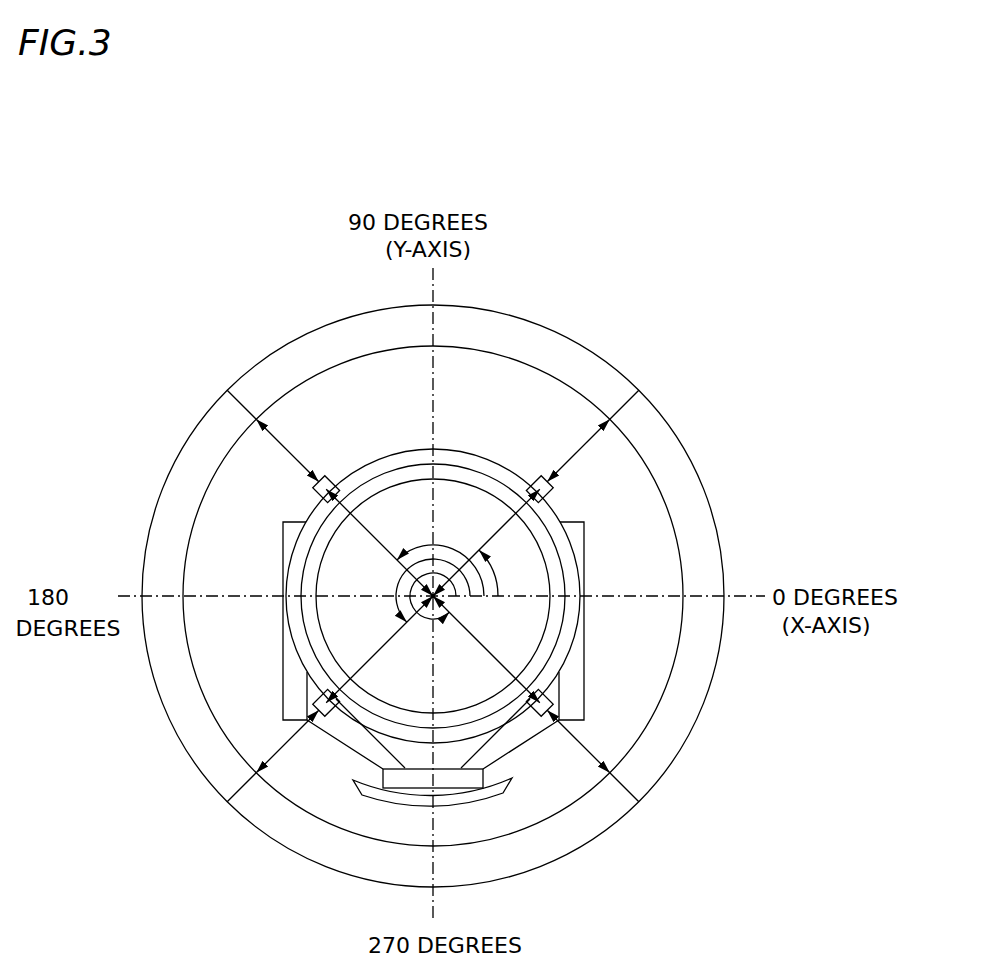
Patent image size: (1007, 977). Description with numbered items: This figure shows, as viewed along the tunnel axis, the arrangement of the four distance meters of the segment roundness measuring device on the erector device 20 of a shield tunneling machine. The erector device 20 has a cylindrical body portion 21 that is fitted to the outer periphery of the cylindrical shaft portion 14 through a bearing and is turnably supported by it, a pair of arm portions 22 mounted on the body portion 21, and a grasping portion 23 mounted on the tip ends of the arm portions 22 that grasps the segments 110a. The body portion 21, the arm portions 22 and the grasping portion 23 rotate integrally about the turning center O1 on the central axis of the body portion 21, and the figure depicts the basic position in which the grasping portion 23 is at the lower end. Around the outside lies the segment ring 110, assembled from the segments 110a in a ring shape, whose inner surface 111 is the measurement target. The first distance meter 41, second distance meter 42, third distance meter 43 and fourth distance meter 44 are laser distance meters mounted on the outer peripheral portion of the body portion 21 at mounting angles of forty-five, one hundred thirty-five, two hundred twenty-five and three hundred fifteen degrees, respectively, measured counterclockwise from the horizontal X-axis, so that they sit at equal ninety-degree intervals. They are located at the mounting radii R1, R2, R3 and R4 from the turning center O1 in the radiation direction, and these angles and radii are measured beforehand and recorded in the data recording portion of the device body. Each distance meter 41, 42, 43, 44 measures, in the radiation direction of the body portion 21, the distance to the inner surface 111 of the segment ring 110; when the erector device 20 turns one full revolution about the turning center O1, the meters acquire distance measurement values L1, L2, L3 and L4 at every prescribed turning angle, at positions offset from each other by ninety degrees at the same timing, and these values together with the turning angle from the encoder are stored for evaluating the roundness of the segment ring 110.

The segment ring 110 is at (653, 400).
The segments 110a is at (547, 866).
The inner surface 111 is at (670, 548).
The erector device 20 is at (467, 433).
The cylindrical body portion 21 is at (362, 470).
The cylindrical shaft portion 14 is at (412, 465).
The arm portions 22 is at (580, 652).
The grasping portion 23 is at (512, 782).
The first distance meter 41 is at (553, 494).
The second distance meter 42 is at (317, 490).
The third distance meter 43 is at (313, 702).
The fourth distance meter 44 is at (556, 700).
The distance measurement value L1 is at (593, 436).
The distance measurement value L2 is at (275, 445).
The distance measurement value L3 is at (277, 752).
The distance measurement value L4 is at (588, 747).
The mounting radius R1 is at (500, 527).
The mounting radius R2 is at (365, 528).
The mounting radius R3 is at (365, 664).
The mounting radius R4 is at (500, 663).
The turning center O1 is at (434, 597).